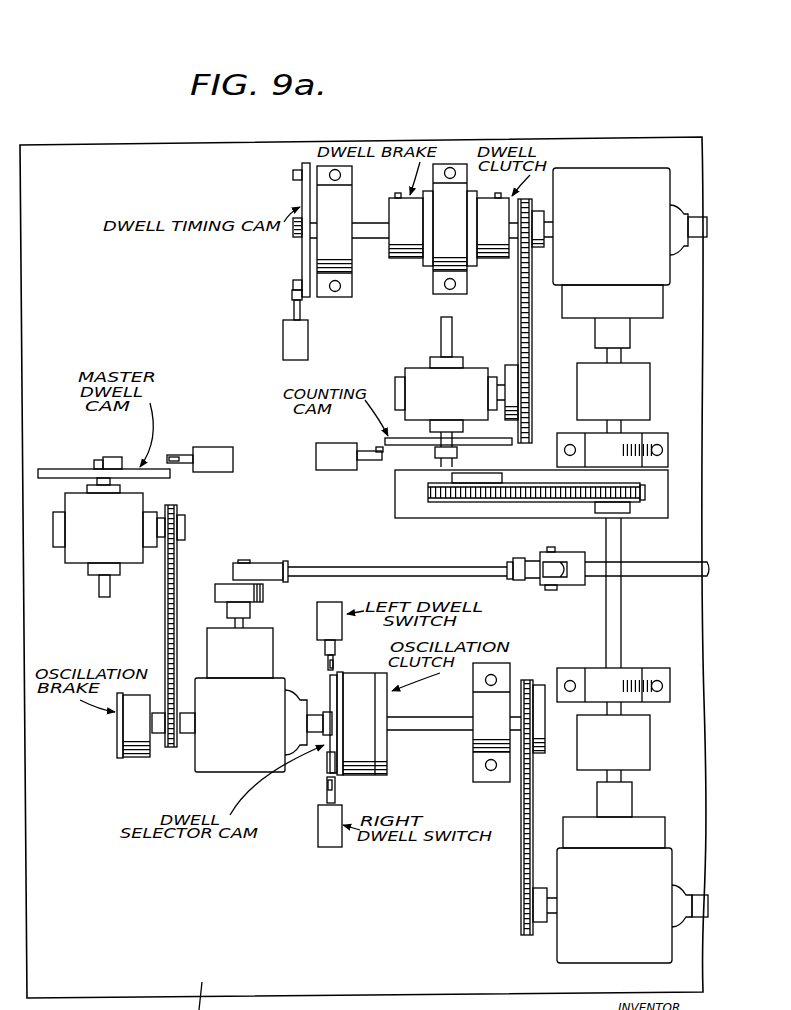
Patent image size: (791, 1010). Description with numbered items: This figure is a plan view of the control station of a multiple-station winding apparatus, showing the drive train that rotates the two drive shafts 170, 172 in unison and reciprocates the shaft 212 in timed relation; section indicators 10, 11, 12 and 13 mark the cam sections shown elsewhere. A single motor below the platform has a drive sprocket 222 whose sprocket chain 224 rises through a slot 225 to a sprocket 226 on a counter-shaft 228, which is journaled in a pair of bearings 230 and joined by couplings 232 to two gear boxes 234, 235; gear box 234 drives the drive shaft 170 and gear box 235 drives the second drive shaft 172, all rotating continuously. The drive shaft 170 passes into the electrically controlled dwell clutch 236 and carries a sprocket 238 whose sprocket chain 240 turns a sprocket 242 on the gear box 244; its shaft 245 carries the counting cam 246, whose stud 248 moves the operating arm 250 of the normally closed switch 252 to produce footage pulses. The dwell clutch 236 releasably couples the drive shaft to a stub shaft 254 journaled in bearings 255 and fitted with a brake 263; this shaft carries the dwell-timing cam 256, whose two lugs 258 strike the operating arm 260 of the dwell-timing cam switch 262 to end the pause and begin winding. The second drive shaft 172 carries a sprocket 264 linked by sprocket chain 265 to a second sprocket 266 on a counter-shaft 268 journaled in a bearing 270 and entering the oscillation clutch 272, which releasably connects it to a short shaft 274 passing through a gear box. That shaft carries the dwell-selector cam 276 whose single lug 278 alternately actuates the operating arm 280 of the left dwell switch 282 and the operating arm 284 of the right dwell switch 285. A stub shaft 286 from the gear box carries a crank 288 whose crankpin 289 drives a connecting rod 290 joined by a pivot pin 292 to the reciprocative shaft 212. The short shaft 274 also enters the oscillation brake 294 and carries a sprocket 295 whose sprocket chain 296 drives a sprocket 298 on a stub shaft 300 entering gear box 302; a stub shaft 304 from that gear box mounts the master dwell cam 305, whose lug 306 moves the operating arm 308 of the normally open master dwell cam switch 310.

The section line 10 is at (40, 441).
The section line 11 is at (312, 637).
The section line 12 is at (277, 158).
The section line 13 is at (352, 472).
The drive shaft 170 is at (700, 222).
The second drive shaft 172 is at (700, 917).
The reciprocative shaft 212 is at (688, 577).
The drive sprocket 222 is at (458, 477).
The sprocket chain 224 is at (512, 503).
The slot 225 is at (432, 512).
The sprocket 226 is at (645, 491).
The counter-shaft 228 is at (622, 535).
The bearings 230 is at (635, 445).
The couplings 232 is at (640, 388).
The gear box 234 is at (620, 265).
The gear box 235 is at (624, 872).
The dwell clutch 236 is at (500, 245).
The sprocket 238 is at (530, 203).
The sprocket chain 240 is at (528, 353).
The sprocket 242 is at (507, 366).
The gear box 244 is at (446, 412).
The shaft 245 is at (443, 351).
The counting cam 246 is at (470, 443).
The stud 248 is at (382, 461).
The operating arm 250 is at (379, 447).
The switch 252 is at (323, 457).
The stub shaft 254 is at (370, 222).
The bearings 255 is at (346, 250).
The dwell-timing cam 256 is at (306, 257).
The lugs 258 is at (297, 181).
The operating arm 260 is at (302, 312).
The dwell-timing cam switch 262 is at (292, 352).
The brake 263 is at (415, 248).
The sprocket 264 is at (540, 924).
The sprocket chain 265 is at (525, 846).
The second sprocket 266 is at (538, 690).
The counter-shaft 268 is at (455, 732).
The bearing 270 is at (490, 714).
The oscillation clutch 272 is at (378, 750).
The short shaft 274 is at (322, 720).
The dwell-selector cam 276 is at (329, 676).
The lug 278 is at (327, 765).
The operating arm 280 is at (336, 648).
The left dwell switch 282 is at (332, 602).
The operating arm 284 is at (335, 790).
The right dwell switch 285 is at (333, 847).
The stub shaft 286 is at (238, 626).
The crank 288 is at (223, 584).
The crankpin 289 is at (248, 563).
The connecting rod 290 is at (332, 567).
The pivot pin 292 is at (553, 550).
The oscillation brake 294 is at (135, 731).
The sprocket 295 is at (188, 740).
The sprocket chain 296 is at (165, 628).
The sprocket 298 is at (185, 524).
The stub shaft 300 is at (166, 532).
The gear box 302 is at (105, 520).
The stub shaft 304 is at (98, 583).
The master dwell cam 305 is at (73, 470).
The lug 306 is at (114, 457).
The operating arm 308 is at (178, 466).
The master dwell cam switch 310 is at (232, 451).